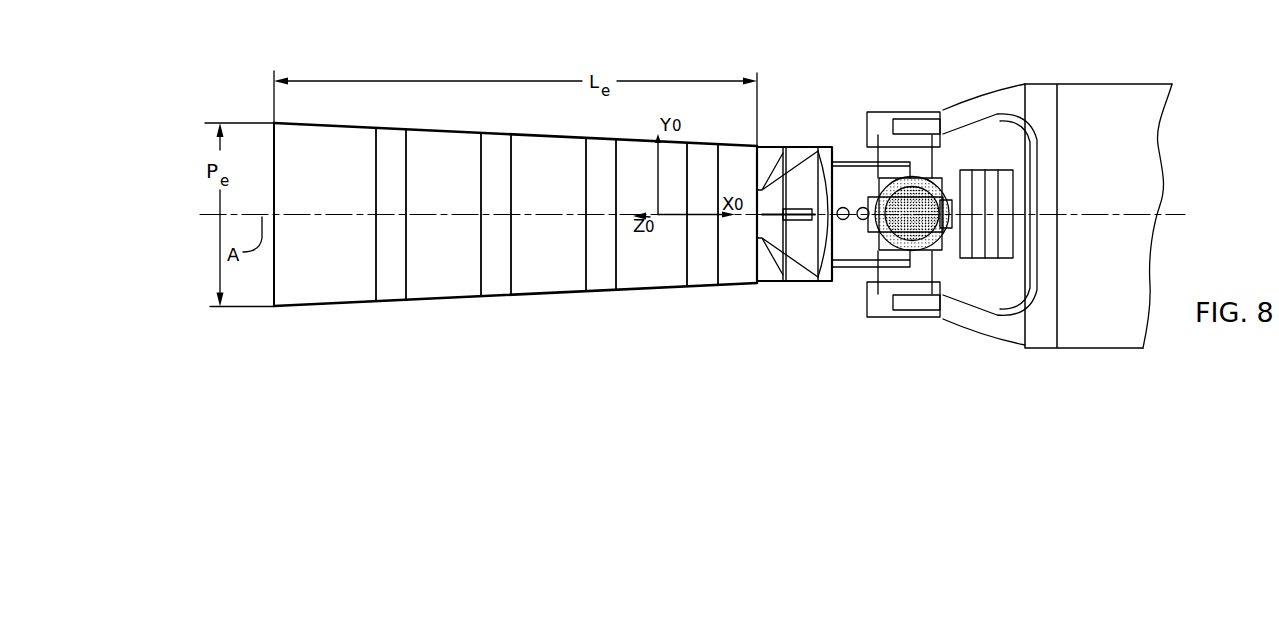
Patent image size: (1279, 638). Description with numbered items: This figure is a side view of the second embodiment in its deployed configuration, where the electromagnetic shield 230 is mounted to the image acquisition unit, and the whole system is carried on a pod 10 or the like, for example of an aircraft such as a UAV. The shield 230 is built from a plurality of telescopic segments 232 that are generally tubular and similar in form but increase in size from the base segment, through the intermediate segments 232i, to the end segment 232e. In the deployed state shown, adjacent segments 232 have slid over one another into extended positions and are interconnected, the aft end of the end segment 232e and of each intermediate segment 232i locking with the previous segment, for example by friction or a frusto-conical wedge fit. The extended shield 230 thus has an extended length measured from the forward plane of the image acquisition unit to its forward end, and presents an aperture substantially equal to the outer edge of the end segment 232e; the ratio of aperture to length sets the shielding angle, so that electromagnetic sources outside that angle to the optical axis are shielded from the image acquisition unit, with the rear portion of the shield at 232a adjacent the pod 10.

The pod 10 is at (1113, 84).
The electromagnetic shield 230 is at (330, 74).
The telescopic segments 232 is at (543, 132).
The end segment 232e is at (318, 307).
The intermediate segments 232i is at (557, 307).
The horn throat / feed section 232a is at (798, 284).